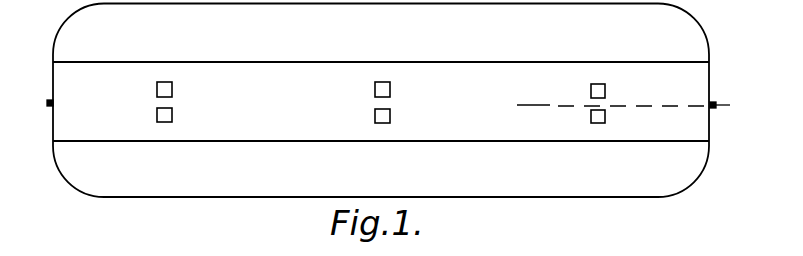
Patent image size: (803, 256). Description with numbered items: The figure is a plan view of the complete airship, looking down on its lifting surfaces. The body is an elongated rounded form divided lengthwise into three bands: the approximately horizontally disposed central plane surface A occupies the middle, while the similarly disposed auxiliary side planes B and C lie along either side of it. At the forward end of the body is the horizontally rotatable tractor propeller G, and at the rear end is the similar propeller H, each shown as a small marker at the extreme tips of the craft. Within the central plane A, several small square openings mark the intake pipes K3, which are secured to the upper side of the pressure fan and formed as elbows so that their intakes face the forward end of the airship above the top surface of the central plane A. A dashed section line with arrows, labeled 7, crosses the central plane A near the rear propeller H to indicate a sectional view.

The central plane surface A is at (267, 100).
The auxiliary side plane B is at (381, 44).
The auxiliary side plane C is at (381, 157).
The propeller H is at (48, 104).
The tractor propeller G is at (713, 110).
The intake pipe K3 is at (157, 90).
The section line 7 is at (520, 96).